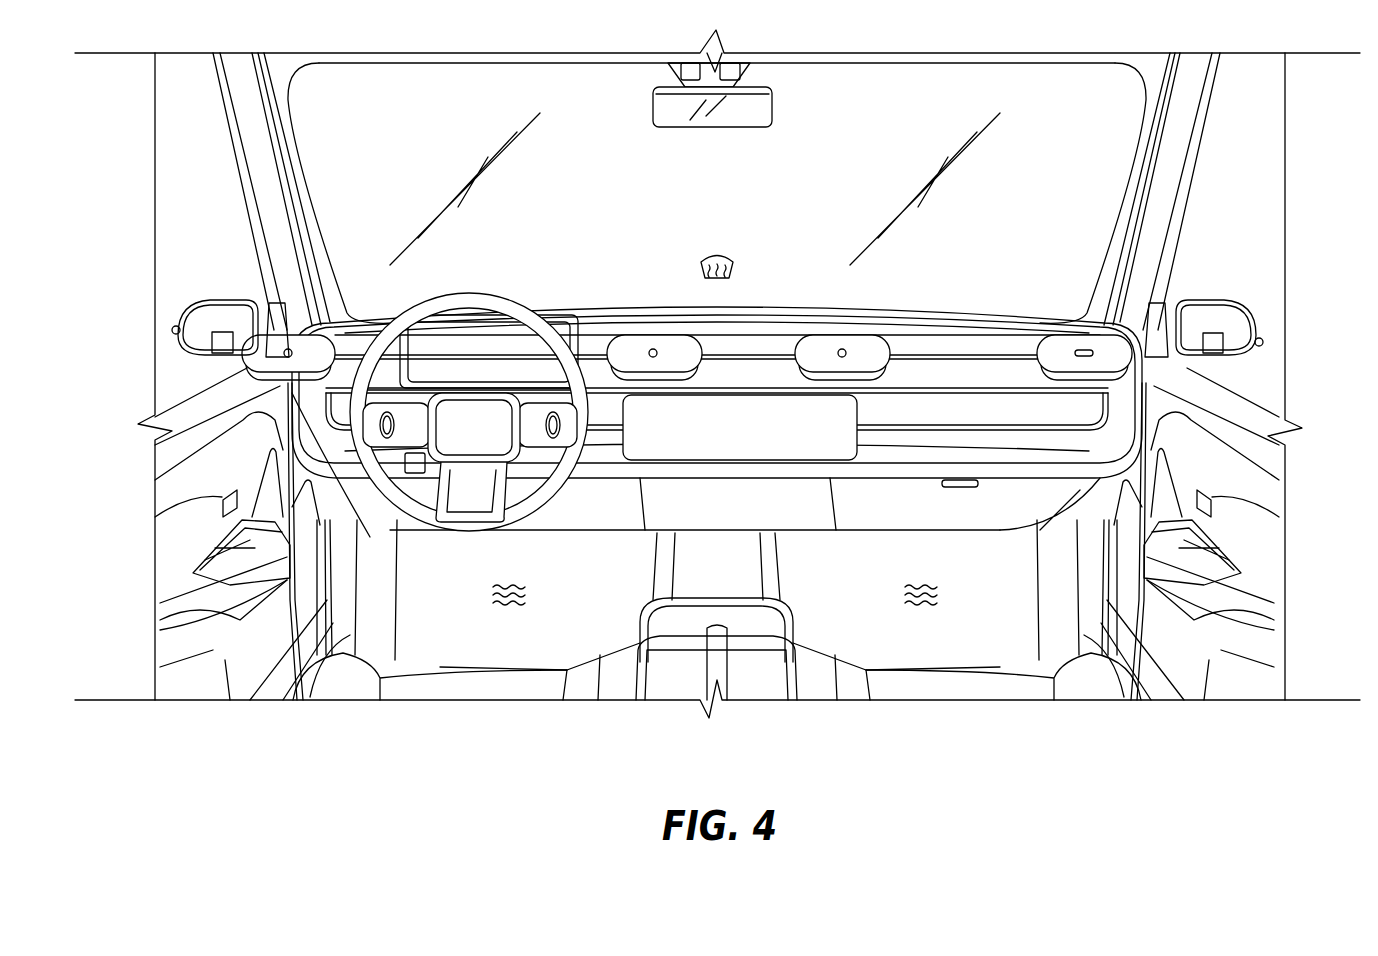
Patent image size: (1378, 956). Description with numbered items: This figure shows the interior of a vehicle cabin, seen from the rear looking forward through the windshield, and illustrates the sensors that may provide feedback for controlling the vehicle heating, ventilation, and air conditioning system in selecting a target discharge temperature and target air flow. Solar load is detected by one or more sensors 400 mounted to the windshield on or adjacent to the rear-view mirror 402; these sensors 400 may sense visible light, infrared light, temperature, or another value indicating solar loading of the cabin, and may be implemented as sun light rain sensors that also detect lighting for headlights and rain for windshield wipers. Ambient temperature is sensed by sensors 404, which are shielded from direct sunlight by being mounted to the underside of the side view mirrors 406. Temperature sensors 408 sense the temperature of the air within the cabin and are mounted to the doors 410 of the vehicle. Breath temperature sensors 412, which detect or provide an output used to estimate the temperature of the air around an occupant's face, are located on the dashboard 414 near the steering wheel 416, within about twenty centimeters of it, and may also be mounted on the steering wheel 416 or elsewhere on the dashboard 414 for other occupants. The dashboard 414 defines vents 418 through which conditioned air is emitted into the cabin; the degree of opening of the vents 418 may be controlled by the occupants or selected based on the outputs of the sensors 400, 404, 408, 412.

The sensors 400 is at (680, 72).
The rear-view mirror 402 is at (733, 115).
The sensors 404 is at (212, 352).
The side view mirrors 406 is at (227, 317).
The temperature sensors 408 is at (222, 503).
The doors 410 is at (205, 550).
The breath temperature sensors 412 is at (415, 476).
The dashboard 414 is at (948, 365).
The steering wheel 416 is at (580, 445).
The vents 418 is at (322, 380).